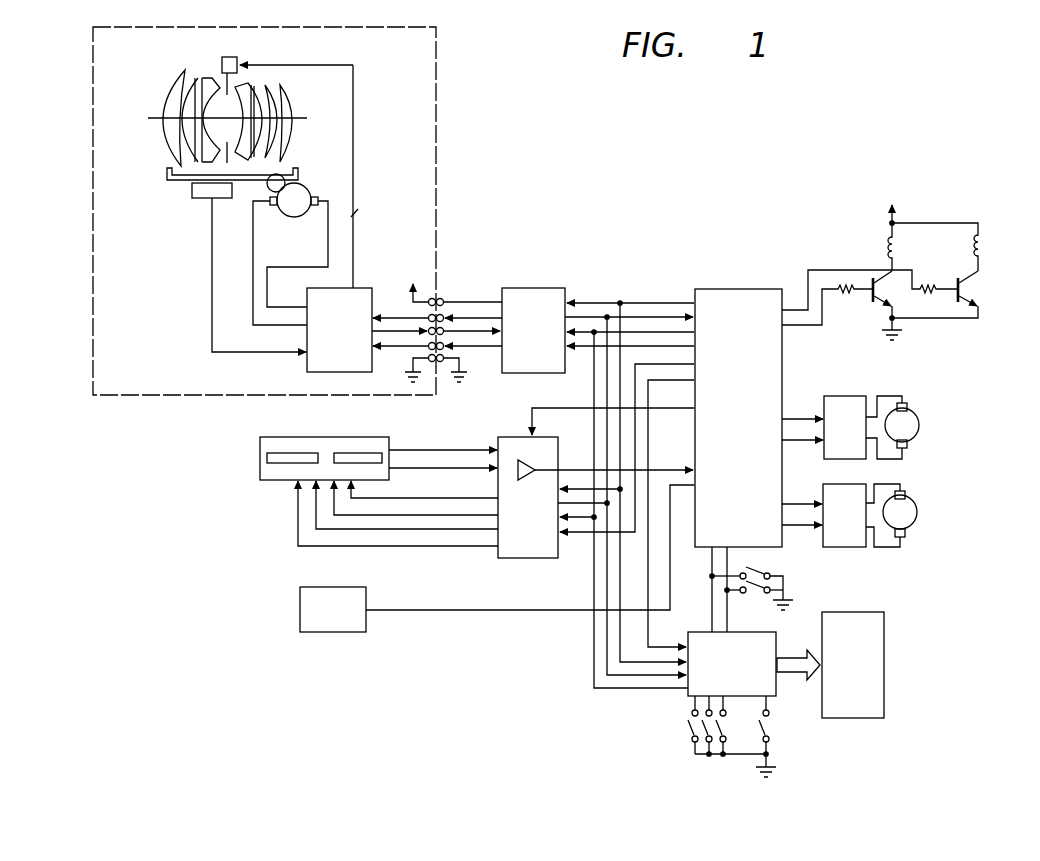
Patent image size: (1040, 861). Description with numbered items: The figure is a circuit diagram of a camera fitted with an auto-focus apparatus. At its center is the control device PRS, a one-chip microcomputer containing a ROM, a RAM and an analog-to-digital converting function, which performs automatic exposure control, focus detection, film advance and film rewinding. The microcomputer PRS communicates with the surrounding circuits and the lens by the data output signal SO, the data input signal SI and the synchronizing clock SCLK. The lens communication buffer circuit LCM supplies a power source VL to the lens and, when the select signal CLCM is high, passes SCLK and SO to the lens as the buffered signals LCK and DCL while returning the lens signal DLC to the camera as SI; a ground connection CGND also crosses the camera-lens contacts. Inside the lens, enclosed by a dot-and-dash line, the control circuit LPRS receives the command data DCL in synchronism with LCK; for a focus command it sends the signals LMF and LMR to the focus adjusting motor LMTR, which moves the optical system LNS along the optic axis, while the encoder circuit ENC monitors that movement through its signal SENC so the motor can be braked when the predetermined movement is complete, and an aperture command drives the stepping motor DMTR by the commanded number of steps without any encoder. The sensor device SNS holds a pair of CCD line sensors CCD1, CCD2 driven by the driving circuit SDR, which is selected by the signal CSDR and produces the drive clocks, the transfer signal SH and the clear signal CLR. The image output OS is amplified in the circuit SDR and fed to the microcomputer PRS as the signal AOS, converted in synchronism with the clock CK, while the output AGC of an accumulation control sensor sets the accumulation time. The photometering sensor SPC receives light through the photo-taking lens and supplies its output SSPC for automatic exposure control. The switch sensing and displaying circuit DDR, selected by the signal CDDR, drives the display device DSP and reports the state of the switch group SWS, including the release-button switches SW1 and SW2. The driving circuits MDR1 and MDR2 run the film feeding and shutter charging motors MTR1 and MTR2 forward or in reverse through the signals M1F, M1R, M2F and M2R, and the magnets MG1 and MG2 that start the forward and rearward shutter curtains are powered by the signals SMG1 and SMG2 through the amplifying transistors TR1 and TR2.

The photographing lens LNS is at (296, 110).
The stepping motor DMTR is at (233, 57).
The encoder circuit ENC is at (195, 199).
The encoder signal SENC is at (259, 275).
The focus adjusting motor LMTR is at (303, 190).
The lens motor forward signal LMF is at (297, 255).
The lens motor reverse signal LMR is at (280, 263).
The lens control circuit LPRS is at (362, 290).
The power source VL is at (457, 295).
The camera-to-lens data signal DCL is at (437, 312).
The lens-to-camera data signal DLC is at (436, 326).
The lens synchronizing clock LCK is at (437, 341).
The common ground line CGND is at (452, 366).
The lens communication buffer circuit LCM is at (540, 289).
The data output signal SO is at (627, 475).
The data input signal SI is at (625, 488).
The synchronizing clock signal SCLK is at (627, 502).
The LCM select signal CLCM is at (630, 338).
The SDR select signal CSDR is at (627, 440).
The DDR select signal CDDR is at (671, 505).
The clock signal CK is at (613, 414).
The control device PRS is at (753, 289).
The sensor device SNS is at (332, 437).
The CCD line sensor CCD1 is at (280, 463).
The CCD line sensor CCD2 is at (367, 453).
The accumulation control signal AGC is at (443, 442).
The sensor output signal OS is at (443, 460).
The transfer signal SH is at (407, 505).
The clear signal CLR is at (398, 514).
The sensor driving circuit SDR is at (523, 559).
The amplified sensor output signal AOS is at (614, 462).
The photometering sensor SPC is at (330, 630).
The photometering output signal SSPC is at (530, 547).
The magnet drive signal SMG1 is at (870, 282).
The magnet drive signal SMG2 is at (827, 312).
The shutter magnet MG1 is at (983, 243).
The shutter magnet MG2 is at (887, 243).
The amplifying transistor TR1 is at (972, 288).
The amplifying transistor TR2 is at (888, 290).
The motor driving circuit MDR1 is at (852, 398).
The motor driving circuit MDR2 is at (850, 545).
The motor 1 forward signal M1F is at (802, 411).
The motor 1 reverse signal M1R is at (802, 432).
The motor 2 forward signal M2F is at (802, 496).
The motor 2 reverse signal M2R is at (802, 517).
The film feeding and shutter charging motor MTR1 is at (913, 422).
The film feeding and shutter charging motor MTR2 is at (913, 508).
The release switch SW1 is at (767, 566).
The release switch SW2 is at (754, 593).
The switch group SWS is at (770, 723).
The switch sensing and displaying circuit DDR is at (757, 637).
The display device DSP is at (860, 718).